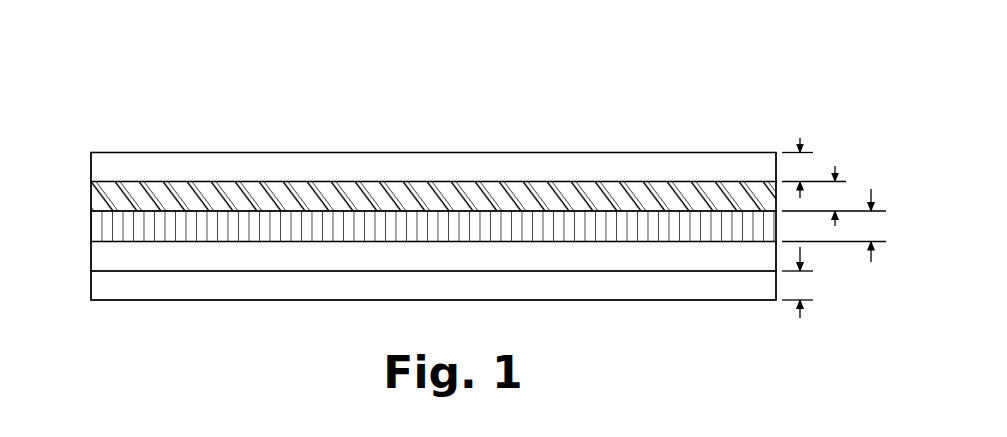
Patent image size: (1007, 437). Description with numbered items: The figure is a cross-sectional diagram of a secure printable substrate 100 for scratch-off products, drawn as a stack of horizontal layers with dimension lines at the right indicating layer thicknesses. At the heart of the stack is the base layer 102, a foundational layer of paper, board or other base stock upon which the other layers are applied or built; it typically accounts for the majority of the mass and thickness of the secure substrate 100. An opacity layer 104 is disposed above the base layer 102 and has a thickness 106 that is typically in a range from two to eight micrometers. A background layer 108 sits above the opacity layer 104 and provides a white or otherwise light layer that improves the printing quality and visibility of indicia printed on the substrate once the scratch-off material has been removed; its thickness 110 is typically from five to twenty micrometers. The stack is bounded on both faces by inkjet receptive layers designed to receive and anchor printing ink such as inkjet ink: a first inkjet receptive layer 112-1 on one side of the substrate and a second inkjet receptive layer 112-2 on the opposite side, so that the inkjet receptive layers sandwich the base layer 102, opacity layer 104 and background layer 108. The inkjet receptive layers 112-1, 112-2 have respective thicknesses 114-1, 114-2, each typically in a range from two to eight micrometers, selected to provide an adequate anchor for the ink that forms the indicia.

The secure printable substrate 100 is at (126, 78).
The base layer 102 is at (91, 257).
The opacity layer 104 is at (91, 227).
The thickness of opacity layer 106 is at (871, 262).
The background layer 108 is at (91, 197).
The thickness of background layer 110 is at (835, 166).
The first inkjet receptive layer 112-1 is at (91, 287).
The second inkjet receptive layer 112-2 is at (91, 166).
The thickness of first inkjet receptive layer 114-1 is at (800, 318).
The thickness of second inkjet receptive layer 114-2 is at (800, 136).